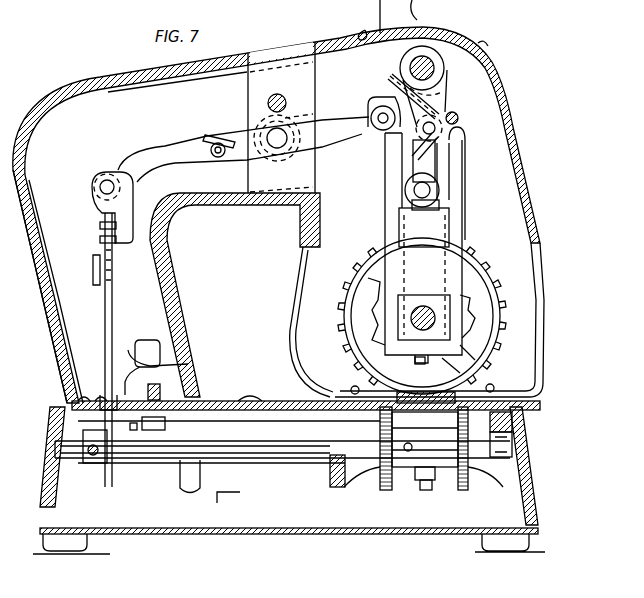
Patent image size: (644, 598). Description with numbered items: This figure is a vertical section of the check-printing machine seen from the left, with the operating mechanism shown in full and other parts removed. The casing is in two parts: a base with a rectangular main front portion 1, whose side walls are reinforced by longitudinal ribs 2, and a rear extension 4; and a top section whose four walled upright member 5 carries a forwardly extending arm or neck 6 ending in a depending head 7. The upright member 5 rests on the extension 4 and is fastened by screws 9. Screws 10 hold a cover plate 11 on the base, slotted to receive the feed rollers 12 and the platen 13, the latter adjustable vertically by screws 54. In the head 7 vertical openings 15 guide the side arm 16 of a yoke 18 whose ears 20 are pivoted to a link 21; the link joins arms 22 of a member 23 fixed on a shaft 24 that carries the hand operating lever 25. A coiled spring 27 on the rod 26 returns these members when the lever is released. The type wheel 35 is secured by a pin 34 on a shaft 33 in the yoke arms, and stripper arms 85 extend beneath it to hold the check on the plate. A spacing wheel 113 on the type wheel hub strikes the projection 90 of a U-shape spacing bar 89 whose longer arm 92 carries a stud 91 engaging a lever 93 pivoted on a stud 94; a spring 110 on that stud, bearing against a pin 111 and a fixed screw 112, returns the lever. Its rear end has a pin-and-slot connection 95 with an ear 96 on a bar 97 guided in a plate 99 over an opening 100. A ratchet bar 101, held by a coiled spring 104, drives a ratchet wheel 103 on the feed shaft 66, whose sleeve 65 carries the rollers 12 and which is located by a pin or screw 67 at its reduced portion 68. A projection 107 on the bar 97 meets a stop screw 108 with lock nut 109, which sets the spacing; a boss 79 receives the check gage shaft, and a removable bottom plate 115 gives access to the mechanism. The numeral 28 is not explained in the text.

The main front portion 1 is at (470, 522).
The longitudinally extending ribs 2 is at (336, 488).
The rear extension 4 is at (152, 521).
The upright member 5 is at (30, 262).
The arm or neck 6 is at (130, 88).
The head 7 is at (513, 130).
The screws 9 is at (134, 432).
The screws 10 is at (250, 400).
The cover plate 11 is at (283, 400).
The feed rollers 12 is at (383, 482).
The platen 13 is at (420, 478).
The openings 15 is at (450, 158).
The side arm 16 is at (423, 248).
The yoke 18 is at (440, 235).
The ears 20 is at (440, 192).
The link 21 is at (436, 166).
The arms 22 is at (445, 92).
The member 23 is at (430, 56).
The shaft 24 is at (408, 70).
The hand operating lever 25 is at (380, 9).
The rod 26 is at (416, 138).
The coiled spring 27 is at (423, 141).
The screw 28 is at (459, 117).
The shaft 33 is at (424, 306).
The pin 34 is at (362, 280).
The type wheel 35 is at (346, 333).
The screws 54 is at (430, 490).
The sleeve 65 is at (395, 470).
The shaft 66 is at (284, 458).
The pin or screw 67 is at (514, 430).
The reduced portion 68 is at (513, 452).
The boss 79 is at (162, 362).
The stripper arms 85 is at (438, 393).
The spacing bar 89 is at (455, 345).
The projection 90 is at (415, 360).
The stud 91 is at (378, 116).
The longer arm 92 is at (392, 216).
The lever 93 is at (177, 153).
The stud 94 is at (277, 149).
The pin-and-slot connection 95 is at (99, 187).
The ear 96 is at (134, 190).
The bar 97 is at (113, 300).
The plate 99 is at (95, 396).
The opening 100 is at (113, 398).
The ratchet bar 101 is at (104, 318).
The ratchet wheel 103 is at (105, 472).
The coiled spring 104 is at (102, 242).
The projection 107 is at (143, 342).
The screw 108 is at (165, 380).
The lock nut 109 is at (160, 432).
The coiled spring 110 is at (252, 143).
The pin 111 is at (218, 158).
The screw 112 is at (280, 94).
The spacing wheel 113 is at (467, 302).
The bottom plate 115 is at (185, 534).